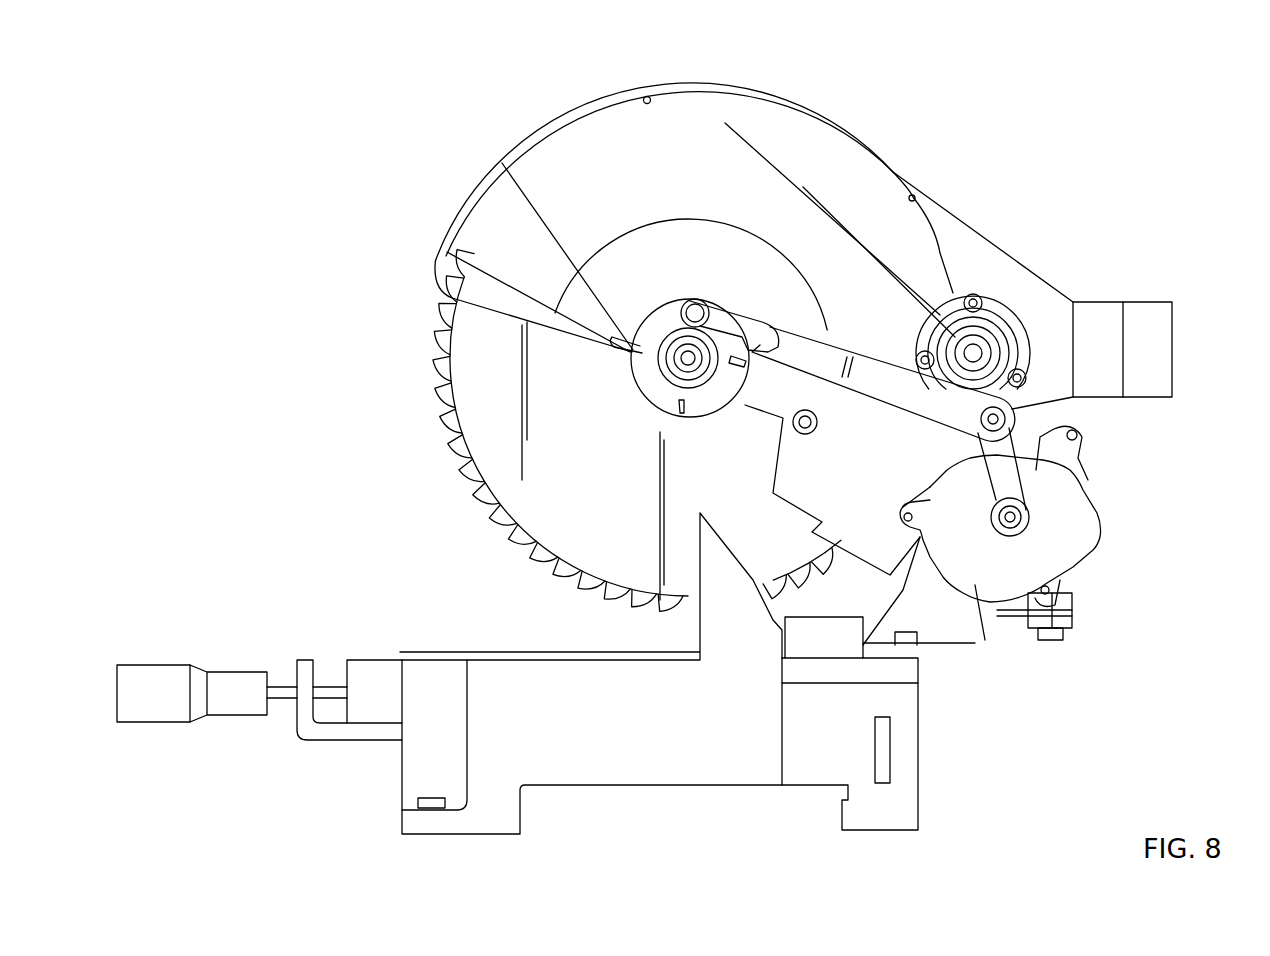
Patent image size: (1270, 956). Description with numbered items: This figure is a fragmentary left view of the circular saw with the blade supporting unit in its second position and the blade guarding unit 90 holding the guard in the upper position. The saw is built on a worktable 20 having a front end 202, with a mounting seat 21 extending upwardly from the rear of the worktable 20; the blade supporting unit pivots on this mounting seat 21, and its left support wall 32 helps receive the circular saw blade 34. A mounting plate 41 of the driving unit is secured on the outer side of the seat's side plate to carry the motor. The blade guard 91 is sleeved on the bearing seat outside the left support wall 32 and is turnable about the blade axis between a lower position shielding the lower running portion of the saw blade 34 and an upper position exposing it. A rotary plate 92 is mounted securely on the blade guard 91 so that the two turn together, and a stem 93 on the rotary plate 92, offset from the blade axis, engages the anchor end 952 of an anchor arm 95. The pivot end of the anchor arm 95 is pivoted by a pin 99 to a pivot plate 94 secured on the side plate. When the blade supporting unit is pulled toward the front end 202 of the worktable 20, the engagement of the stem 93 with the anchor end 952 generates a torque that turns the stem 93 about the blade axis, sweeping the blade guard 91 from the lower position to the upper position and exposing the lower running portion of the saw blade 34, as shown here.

The blade guarding unit 90 is at (505, 133).
The blade guard 91 is at (483, 181).
The rotary plate 92 is at (670, 310).
The stem 93 is at (690, 300).
The anchor end 952 is at (717, 303).
The anchor arm 95 is at (785, 343).
The left support wall 32 is at (1003, 252).
The pin 99 is at (1067, 400).
The pivot plate 94 is at (1017, 468).
The mounting plate 41 is at (1080, 510).
The circular saw blade 34 is at (440, 352).
The front end 202 is at (428, 652).
The worktable 20 is at (402, 775).
The mounting seat 21 is at (988, 642).